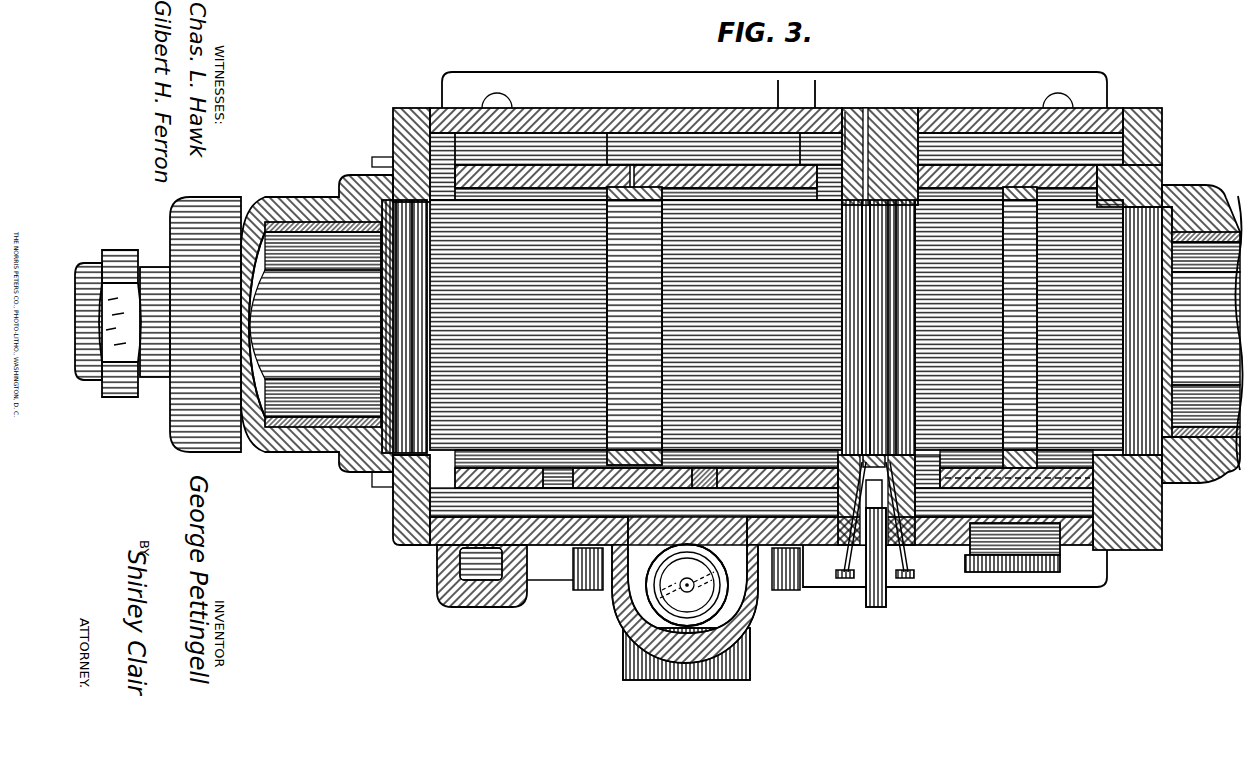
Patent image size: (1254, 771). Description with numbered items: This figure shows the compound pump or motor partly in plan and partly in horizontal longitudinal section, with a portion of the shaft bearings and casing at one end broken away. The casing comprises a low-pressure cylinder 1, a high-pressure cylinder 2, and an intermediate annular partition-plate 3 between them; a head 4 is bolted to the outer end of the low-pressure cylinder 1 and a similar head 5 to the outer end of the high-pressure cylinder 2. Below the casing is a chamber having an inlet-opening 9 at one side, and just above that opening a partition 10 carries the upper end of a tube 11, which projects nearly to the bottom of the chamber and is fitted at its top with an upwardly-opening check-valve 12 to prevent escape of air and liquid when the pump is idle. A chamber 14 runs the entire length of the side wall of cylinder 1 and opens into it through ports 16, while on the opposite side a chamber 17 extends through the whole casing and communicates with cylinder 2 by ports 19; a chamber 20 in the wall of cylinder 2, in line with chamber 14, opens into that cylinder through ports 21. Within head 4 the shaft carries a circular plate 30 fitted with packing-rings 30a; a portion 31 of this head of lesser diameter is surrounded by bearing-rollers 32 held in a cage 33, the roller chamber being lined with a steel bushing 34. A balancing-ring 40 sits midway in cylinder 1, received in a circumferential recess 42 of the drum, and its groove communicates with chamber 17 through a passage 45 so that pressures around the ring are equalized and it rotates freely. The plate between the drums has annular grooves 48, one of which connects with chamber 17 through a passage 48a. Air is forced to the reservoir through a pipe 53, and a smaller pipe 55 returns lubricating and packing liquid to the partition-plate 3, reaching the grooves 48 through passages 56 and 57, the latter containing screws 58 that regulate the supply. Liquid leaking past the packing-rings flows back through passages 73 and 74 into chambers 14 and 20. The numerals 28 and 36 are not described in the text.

The low-pressure cylinder 1 is at (600, 118).
The high-pressure cylinder 2 is at (978, 122).
The intermediate annular partition-plate 3 is at (868, 152).
The head 4 is at (317, 321).
The head 5 is at (1202, 317).
The inlet-opening 9 is at (663, 609).
The partition 10 is at (679, 506).
The tube 11 is at (708, 562).
The check-valve 12 is at (579, 379).
The chamber 14 is at (634, 502).
The ports 16 is at (635, 479).
The chamber 17 is at (703, 149).
The ports 19 is at (1105, 185).
The chamber 20 is at (1030, 488).
The ports 21 is at (1012, 503).
The foot bolt 28 is at (482, 576).
The circular plate 30 is at (406, 326).
The packing-rings 30a is at (372, 480).
The portion of head 31 is at (275, 324).
The bearing-rollers 32 is at (323, 324).
The cage 33 is at (305, 442).
The steel bushing 34 is at (272, 197).
The nut 36 is at (122, 309).
The balancing-ring 40 is at (634, 446).
The circumferential recess 42 is at (634, 326).
The passage 45 is at (632, 168).
The annular grooves 48 is at (915, 266).
The passage 48a is at (845, 112).
The pipe 53 is at (1035, 572).
The pipe 55 is at (876, 607).
The passage 56 is at (873, 494).
The passage 57 is at (874, 467).
The screws 58 is at (868, 534).
The passage 73 is at (393, 498).
The passage 74 is at (1201, 455).